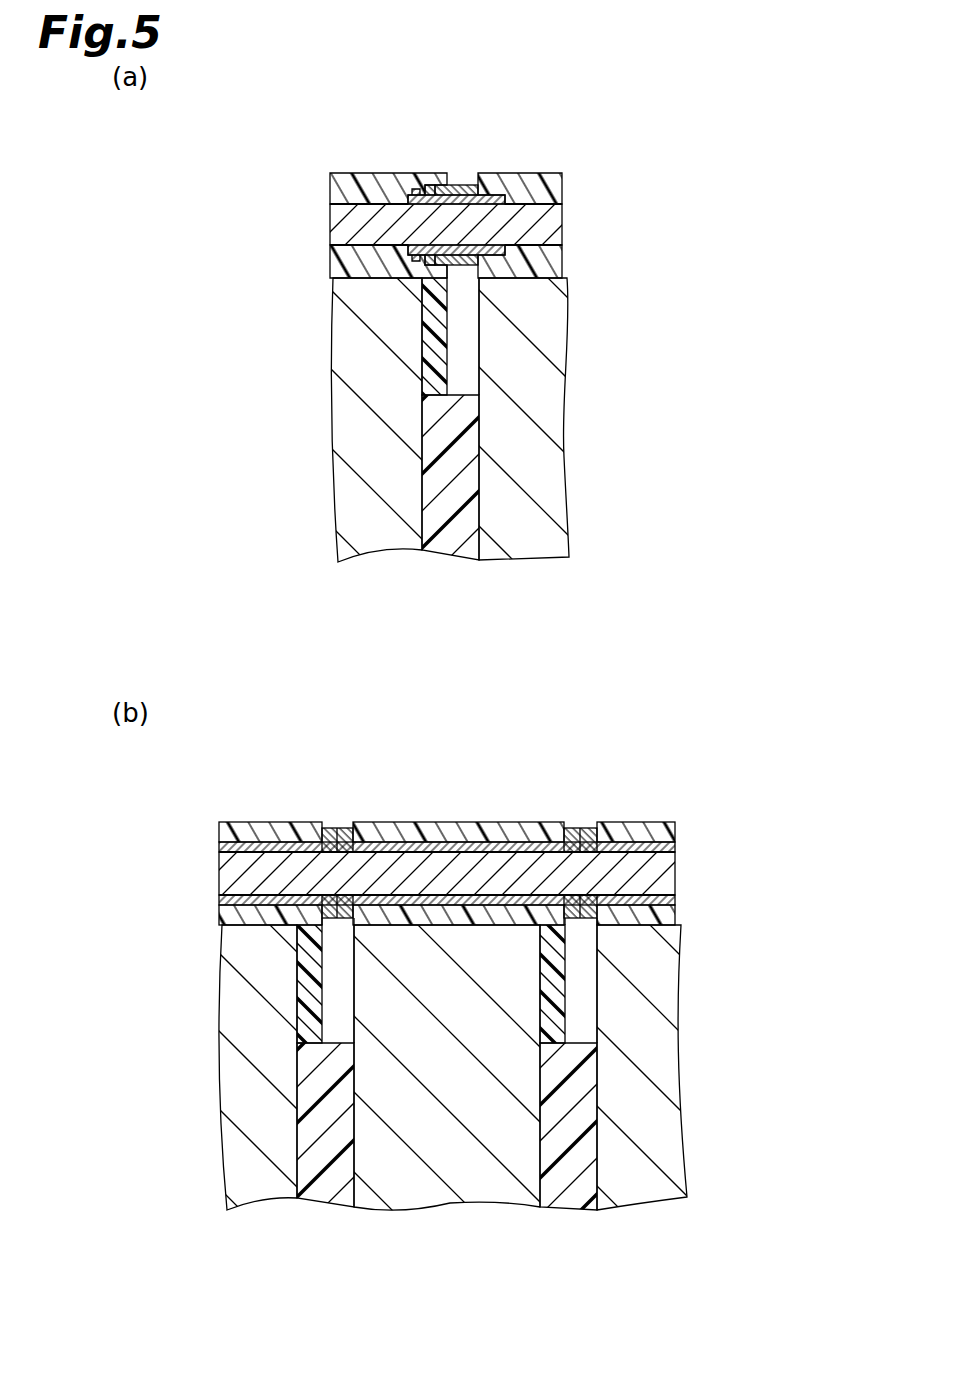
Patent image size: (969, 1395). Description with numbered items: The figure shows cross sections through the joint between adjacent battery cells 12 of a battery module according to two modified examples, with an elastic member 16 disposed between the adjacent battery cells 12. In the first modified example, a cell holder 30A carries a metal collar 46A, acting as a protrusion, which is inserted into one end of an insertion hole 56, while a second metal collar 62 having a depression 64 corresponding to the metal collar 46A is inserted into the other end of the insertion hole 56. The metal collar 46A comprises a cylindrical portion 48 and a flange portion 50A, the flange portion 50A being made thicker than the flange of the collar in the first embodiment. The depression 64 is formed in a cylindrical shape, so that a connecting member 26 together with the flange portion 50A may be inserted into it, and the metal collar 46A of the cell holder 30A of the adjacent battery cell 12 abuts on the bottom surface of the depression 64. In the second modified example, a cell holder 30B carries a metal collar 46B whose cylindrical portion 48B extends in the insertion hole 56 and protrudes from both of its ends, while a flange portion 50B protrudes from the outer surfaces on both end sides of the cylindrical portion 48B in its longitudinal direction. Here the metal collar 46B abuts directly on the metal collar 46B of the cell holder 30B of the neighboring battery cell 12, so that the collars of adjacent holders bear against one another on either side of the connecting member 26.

The battery cell 12 is at (380, 540).
In FIG. 5b, the battery cell 12 is at (255, 1188).
The elastic member 16 is at (450, 540).
In FIG. 5b, the elastic member 16 is at (327, 1188).
The connecting member 26 is at (537, 228).
In FIG. 5b, the connecting member 26 is at (655, 875).
The cell holder 30A is at (350, 173).
In FIG. 5b, the cell holder 30B is at (272, 822).
The metal collar 46A is at (465, 168).
In FIG. 5b, the metal collar 46B is at (447, 814).
The resistor film 48 is at (492, 196).
In FIG. 5b, the cylindrical portion 48B is at (305, 848).
The flange portion 50A is at (456, 186).
In FIG. 5b, the flange portion 50B is at (327, 828).
The insertion hole 56 is at (374, 205).
In FIG. 5b, the insertion hole 56 is at (222, 854).
The metal collar 62 is at (413, 192).
The depression 64 is at (430, 188).